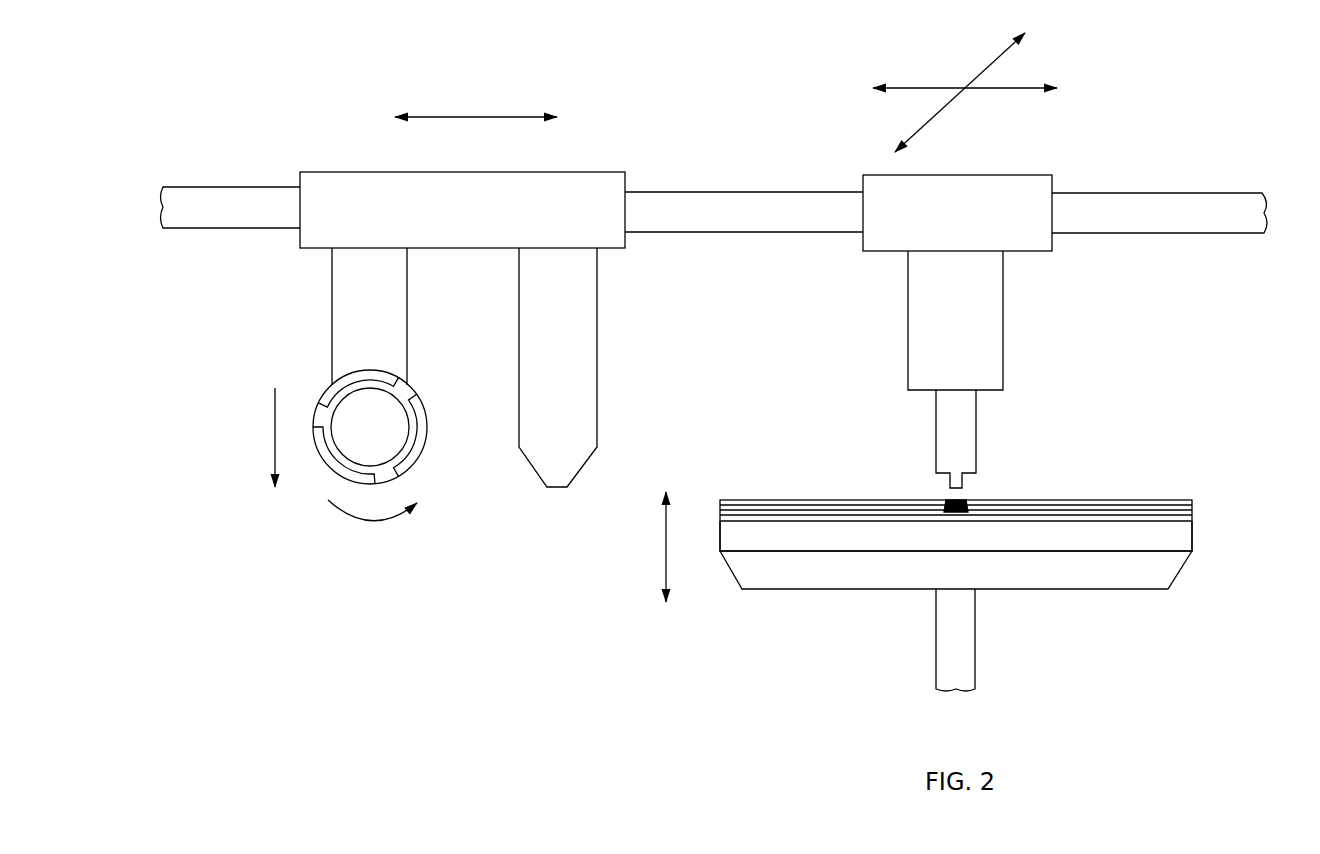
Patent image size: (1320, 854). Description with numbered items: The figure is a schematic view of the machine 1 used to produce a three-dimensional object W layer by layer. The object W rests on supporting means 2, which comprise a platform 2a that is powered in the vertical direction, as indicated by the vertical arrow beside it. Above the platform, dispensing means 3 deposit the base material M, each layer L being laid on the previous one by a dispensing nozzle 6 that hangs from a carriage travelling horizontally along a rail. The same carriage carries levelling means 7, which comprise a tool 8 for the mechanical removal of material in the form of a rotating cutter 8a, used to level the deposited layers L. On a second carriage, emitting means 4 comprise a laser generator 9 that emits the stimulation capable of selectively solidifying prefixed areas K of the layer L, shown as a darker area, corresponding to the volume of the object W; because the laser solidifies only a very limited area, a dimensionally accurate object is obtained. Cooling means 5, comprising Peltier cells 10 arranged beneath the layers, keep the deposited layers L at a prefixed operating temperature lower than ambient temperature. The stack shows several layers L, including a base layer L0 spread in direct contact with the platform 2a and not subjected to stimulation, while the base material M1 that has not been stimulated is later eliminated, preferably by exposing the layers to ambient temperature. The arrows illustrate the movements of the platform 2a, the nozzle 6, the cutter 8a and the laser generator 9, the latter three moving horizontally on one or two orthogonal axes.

The machine 1 is at (437, 647).
The supporting means 2 is at (956, 643).
The platform 2a is at (807, 576).
The dispensing means 3 is at (608, 412).
The emitting means 4 is at (1053, 350).
The cooling means 5 is at (1020, 488).
The dispensing nozzle 6 is at (570, 368).
The levelling means 7 is at (327, 352).
The tool 8 is at (411, 403).
The cutter 8a is at (412, 445).
The laser generator 9 is at (957, 423).
The Peltier cells 10 is at (1177, 537).
The prefixed areas K is at (948, 500).
The three-dimensional object W is at (1015, 478).
The base material M is at (1168, 500).
The non-stimulated base material M1 is at (1090, 512).
The layers L is at (1196, 517).
The base layer L0 is at (1203, 518).